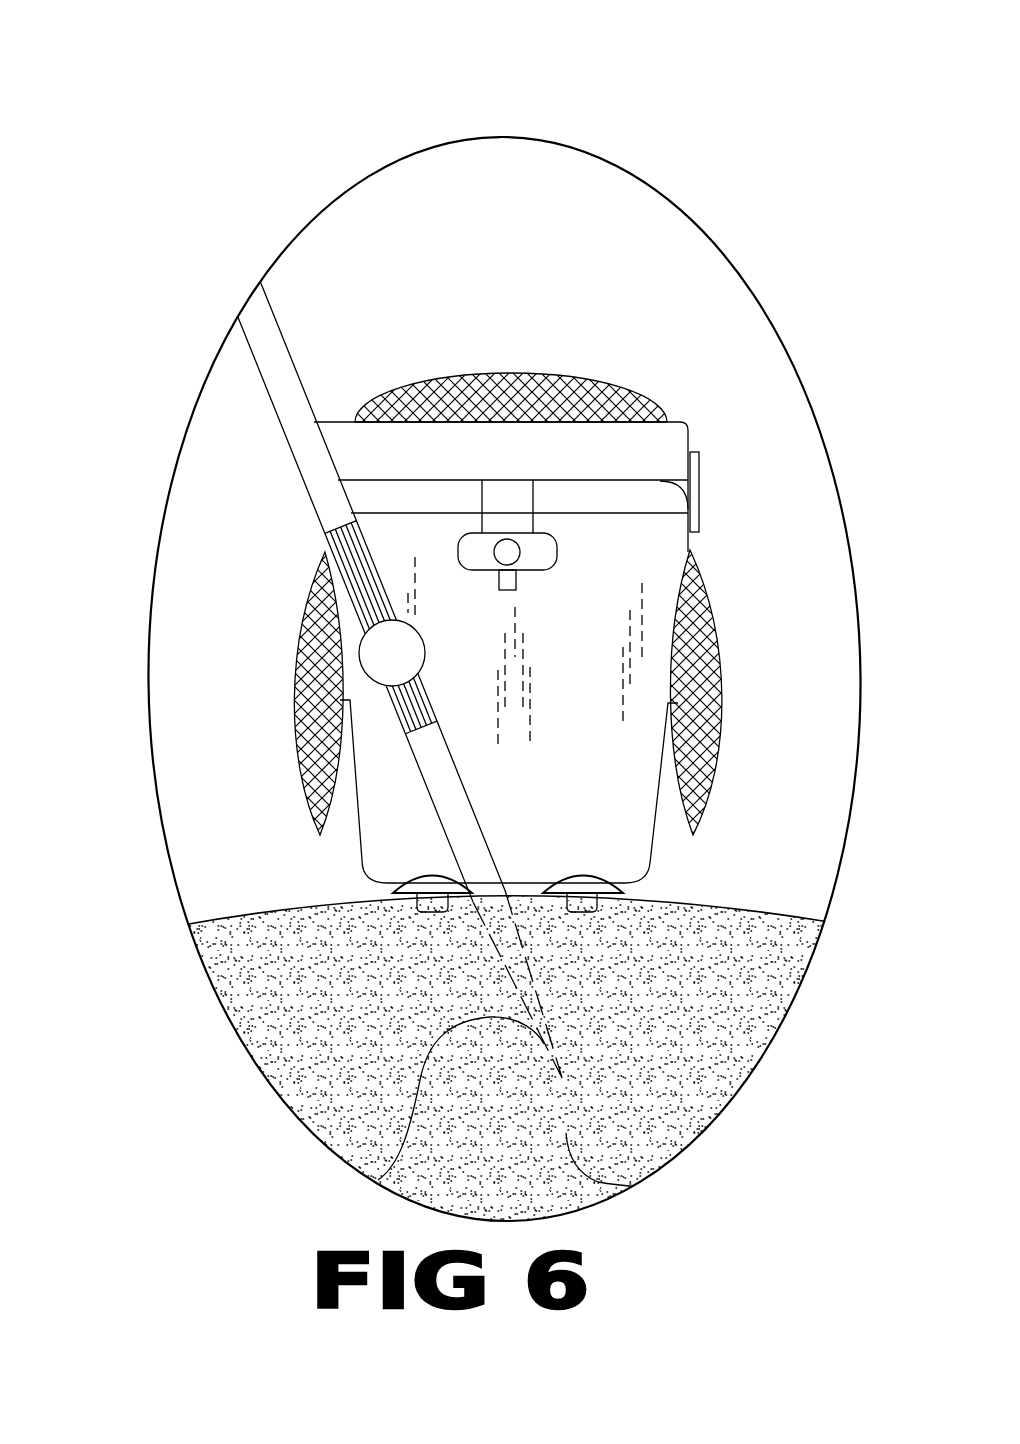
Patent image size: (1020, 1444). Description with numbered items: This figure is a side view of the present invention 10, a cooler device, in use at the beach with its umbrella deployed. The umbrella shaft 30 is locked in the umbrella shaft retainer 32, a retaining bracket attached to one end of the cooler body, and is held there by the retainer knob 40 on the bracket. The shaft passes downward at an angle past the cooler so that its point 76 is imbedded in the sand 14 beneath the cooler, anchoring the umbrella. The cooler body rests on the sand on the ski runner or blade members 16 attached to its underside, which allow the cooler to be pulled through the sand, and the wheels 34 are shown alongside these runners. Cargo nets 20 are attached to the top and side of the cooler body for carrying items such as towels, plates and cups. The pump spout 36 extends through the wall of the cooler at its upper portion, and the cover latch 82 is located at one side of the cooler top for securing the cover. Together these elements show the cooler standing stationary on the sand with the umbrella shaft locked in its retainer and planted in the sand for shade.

The present invention 10 is at (270, 247).
The sand 14 is at (640, 1183).
The ski runner or blades members 16 is at (433, 873).
The cargo nets 20 is at (498, 372).
The umbrella shaft 30 is at (283, 366).
The umbrella shaft retainer 32 is at (325, 552).
The wheels 34 is at (450, 905).
The pump spout 36 is at (552, 536).
The retainer knob 40 is at (360, 651).
The point 76 is at (378, 1180).
The cover latch 82 is at (700, 500).